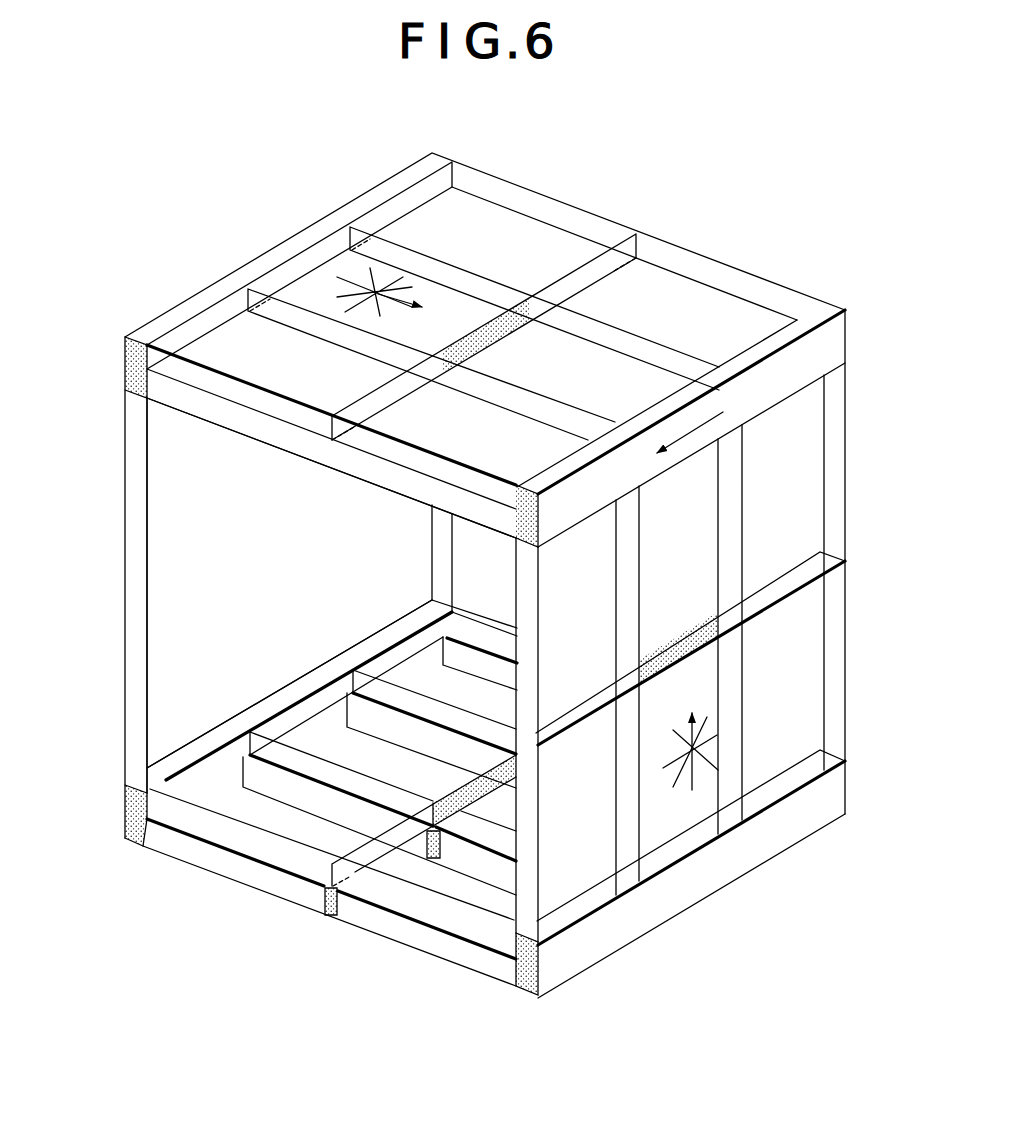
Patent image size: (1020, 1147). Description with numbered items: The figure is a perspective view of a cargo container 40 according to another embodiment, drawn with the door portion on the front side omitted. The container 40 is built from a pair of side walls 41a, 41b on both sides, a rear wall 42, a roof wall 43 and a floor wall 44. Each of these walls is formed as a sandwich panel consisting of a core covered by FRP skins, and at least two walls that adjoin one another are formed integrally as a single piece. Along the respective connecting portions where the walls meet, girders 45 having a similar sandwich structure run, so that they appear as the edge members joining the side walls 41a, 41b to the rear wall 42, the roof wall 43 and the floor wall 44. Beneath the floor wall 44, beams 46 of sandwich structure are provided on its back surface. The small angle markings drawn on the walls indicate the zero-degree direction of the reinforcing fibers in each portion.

The container 40 is at (580, 203).
The side wall 41a is at (178, 566).
The side wall 41b is at (802, 676).
The rear wall 42 is at (462, 558).
The roof wall 43 is at (695, 290).
The floor wall 44 is at (264, 813).
The girders 45 is at (180, 308).
The beams 46 is at (363, 927).